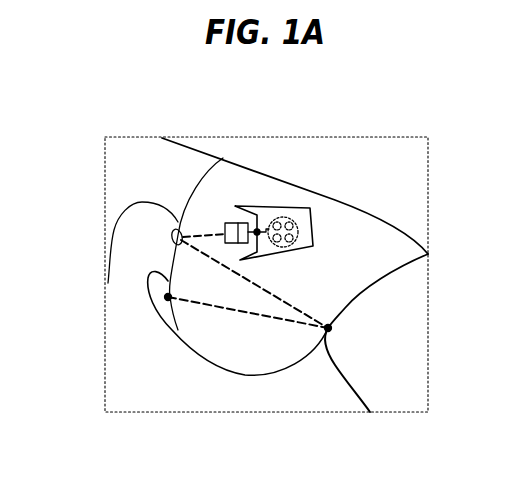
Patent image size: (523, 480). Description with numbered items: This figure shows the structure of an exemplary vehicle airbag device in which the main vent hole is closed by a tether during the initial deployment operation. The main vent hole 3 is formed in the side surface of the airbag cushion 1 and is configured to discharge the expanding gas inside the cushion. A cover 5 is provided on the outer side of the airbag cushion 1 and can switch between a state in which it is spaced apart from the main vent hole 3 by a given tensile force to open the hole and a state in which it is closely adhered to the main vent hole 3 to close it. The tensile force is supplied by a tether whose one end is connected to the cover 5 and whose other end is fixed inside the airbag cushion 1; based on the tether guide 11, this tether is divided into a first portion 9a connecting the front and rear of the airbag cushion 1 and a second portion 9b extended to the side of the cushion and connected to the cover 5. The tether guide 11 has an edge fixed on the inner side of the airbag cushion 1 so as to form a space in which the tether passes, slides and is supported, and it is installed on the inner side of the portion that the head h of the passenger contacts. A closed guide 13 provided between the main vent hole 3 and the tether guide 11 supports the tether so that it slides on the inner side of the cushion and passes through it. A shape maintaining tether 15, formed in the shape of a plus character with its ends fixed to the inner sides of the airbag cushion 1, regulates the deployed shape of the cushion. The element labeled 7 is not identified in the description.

The airbag cushion 1 is at (383, 232).
The main vent hole 3 is at (285, 218).
The cover 5 is at (313, 233).
The eye region frame 7 is at (300, 208).
The first portion 9a is at (267, 293).
The second portion 9b is at (207, 233).
The tether guide 11 is at (172, 237).
The closed guide 13 is at (232, 222).
The shape maintaining tether 15 is at (192, 304).
The head h is at (125, 210).